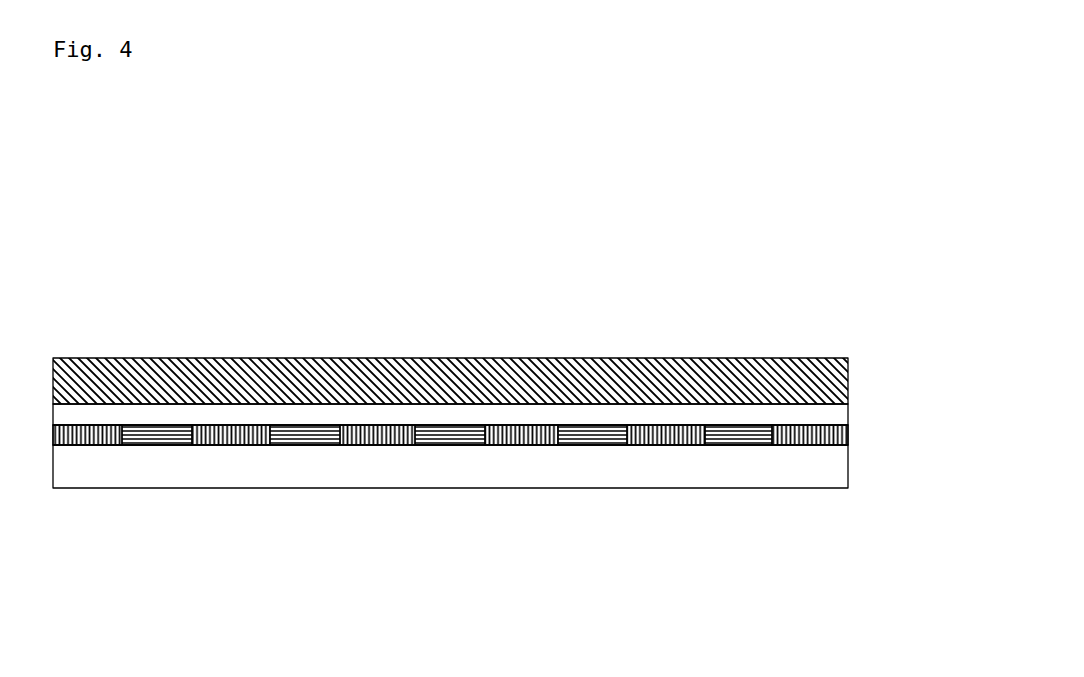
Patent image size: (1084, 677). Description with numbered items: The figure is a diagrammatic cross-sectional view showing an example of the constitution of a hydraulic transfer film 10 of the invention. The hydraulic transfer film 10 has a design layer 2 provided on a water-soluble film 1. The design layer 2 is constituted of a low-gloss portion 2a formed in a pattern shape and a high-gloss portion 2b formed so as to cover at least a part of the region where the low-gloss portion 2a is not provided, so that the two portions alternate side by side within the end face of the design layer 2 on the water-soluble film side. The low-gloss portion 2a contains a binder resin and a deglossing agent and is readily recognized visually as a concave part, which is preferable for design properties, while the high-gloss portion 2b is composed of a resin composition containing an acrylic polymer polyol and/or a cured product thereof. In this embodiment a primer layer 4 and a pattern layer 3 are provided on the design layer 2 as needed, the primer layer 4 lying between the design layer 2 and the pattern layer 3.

The hydraulic transfer film 10 is at (487, 320).
The water-soluble film 1 is at (810, 473).
The design layer 2 is at (475, 490).
The low-gloss portion 2a is at (102, 438).
The high-gloss portion 2b is at (460, 435).
The pattern layer 3 is at (800, 382).
The primer layer 4 is at (823, 413).